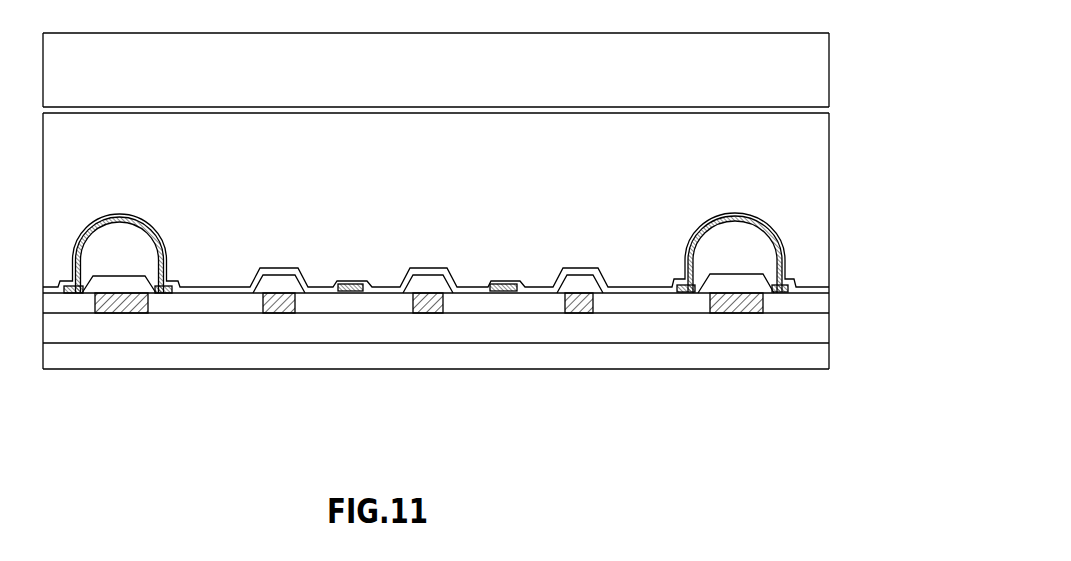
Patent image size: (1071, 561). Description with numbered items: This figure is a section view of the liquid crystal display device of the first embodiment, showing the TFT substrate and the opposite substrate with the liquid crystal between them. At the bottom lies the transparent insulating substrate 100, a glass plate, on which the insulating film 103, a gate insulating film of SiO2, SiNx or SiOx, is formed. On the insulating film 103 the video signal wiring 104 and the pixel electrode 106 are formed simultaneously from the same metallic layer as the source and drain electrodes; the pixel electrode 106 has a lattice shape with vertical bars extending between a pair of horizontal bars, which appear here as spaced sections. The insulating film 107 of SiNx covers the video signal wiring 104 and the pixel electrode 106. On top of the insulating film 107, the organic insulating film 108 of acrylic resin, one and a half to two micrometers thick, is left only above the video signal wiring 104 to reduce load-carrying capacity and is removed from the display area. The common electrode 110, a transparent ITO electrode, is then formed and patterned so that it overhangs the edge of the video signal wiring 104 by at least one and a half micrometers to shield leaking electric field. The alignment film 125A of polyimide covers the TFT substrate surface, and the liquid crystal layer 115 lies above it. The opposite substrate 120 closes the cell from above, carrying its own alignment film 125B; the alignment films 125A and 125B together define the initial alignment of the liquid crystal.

The transparent insulating substrate 100 is at (813, 355).
The insulating film 103 is at (817, 332).
The video signal wiring 104 is at (130, 302).
The pixel electrode 106 is at (279, 302).
The insulating film 107 is at (820, 303).
The insulating film 108 is at (108, 240).
The common electrode 110 is at (158, 242).
The liquid crystal layer 115 is at (808, 212).
The opposite substrate 120 is at (808, 79).
The alignment film 125A is at (820, 286).
The alignment film 125B is at (820, 108).